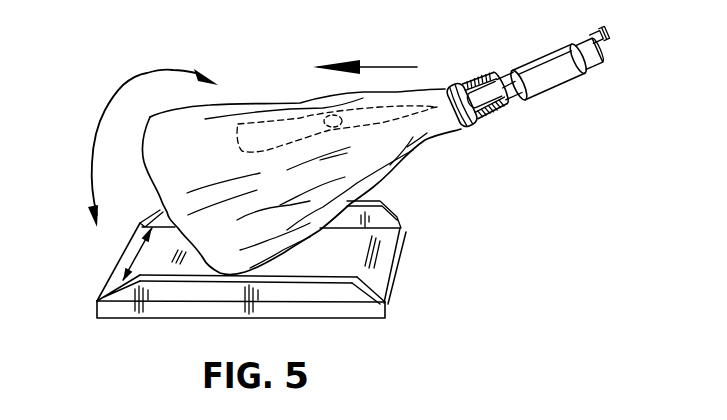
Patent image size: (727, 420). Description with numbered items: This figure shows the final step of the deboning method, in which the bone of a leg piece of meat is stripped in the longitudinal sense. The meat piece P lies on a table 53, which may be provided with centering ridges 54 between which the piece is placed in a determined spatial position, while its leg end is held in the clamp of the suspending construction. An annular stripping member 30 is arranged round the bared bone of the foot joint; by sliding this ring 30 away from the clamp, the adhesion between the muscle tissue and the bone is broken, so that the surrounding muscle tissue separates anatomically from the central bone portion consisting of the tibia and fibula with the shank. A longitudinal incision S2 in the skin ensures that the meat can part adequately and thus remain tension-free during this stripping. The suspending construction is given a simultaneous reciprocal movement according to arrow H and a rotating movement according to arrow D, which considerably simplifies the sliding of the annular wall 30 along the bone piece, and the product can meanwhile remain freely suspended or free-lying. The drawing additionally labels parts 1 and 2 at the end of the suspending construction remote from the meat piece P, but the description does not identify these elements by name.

The pump cylinder / syringe body 1 is at (552, 98).
The cap / plunger end 2 is at (590, 70).
The annular stripping member 30 is at (471, 128).
The table 53 is at (378, 283).
The ridges 54 is at (338, 273).
The meat piece P is at (376, 162).
The longitudinal incision S2 is at (273, 118).
The arrow (rotating movement) D is at (112, 108).
The arrow (reciprocal movement) H is at (128, 256).